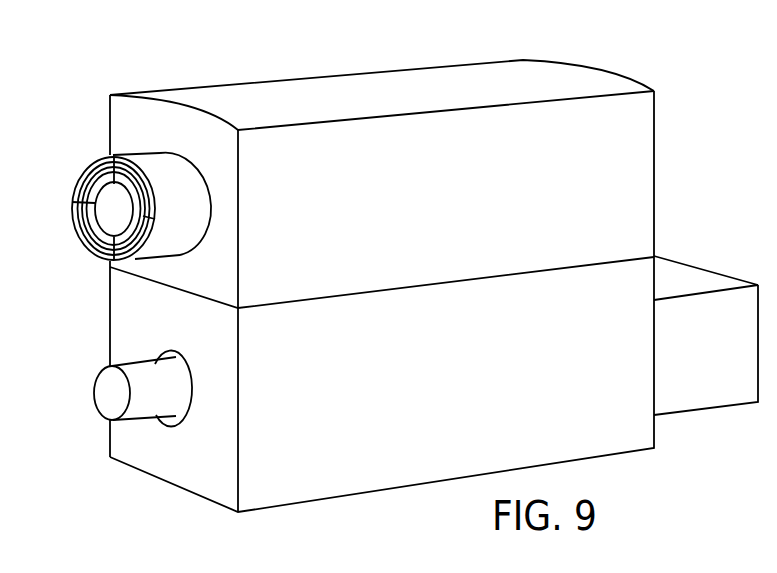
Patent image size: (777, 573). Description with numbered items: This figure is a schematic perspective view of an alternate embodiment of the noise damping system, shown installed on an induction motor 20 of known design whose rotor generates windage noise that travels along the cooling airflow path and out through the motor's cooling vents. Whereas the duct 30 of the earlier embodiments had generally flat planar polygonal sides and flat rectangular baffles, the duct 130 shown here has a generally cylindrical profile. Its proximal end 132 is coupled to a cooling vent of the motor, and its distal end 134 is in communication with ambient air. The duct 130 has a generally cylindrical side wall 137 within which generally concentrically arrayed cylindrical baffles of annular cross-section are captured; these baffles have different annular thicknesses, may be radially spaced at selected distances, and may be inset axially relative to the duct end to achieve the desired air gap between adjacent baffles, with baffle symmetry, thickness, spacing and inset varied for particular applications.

The induction motor 20 is at (167, 505).
The duct 30 is at (695, 382).
The duct 130 is at (181, 165).
The proximal end 132 is at (198, 172).
The distal end 134 is at (80, 233).
The cylindrical side wall 137 is at (173, 245).